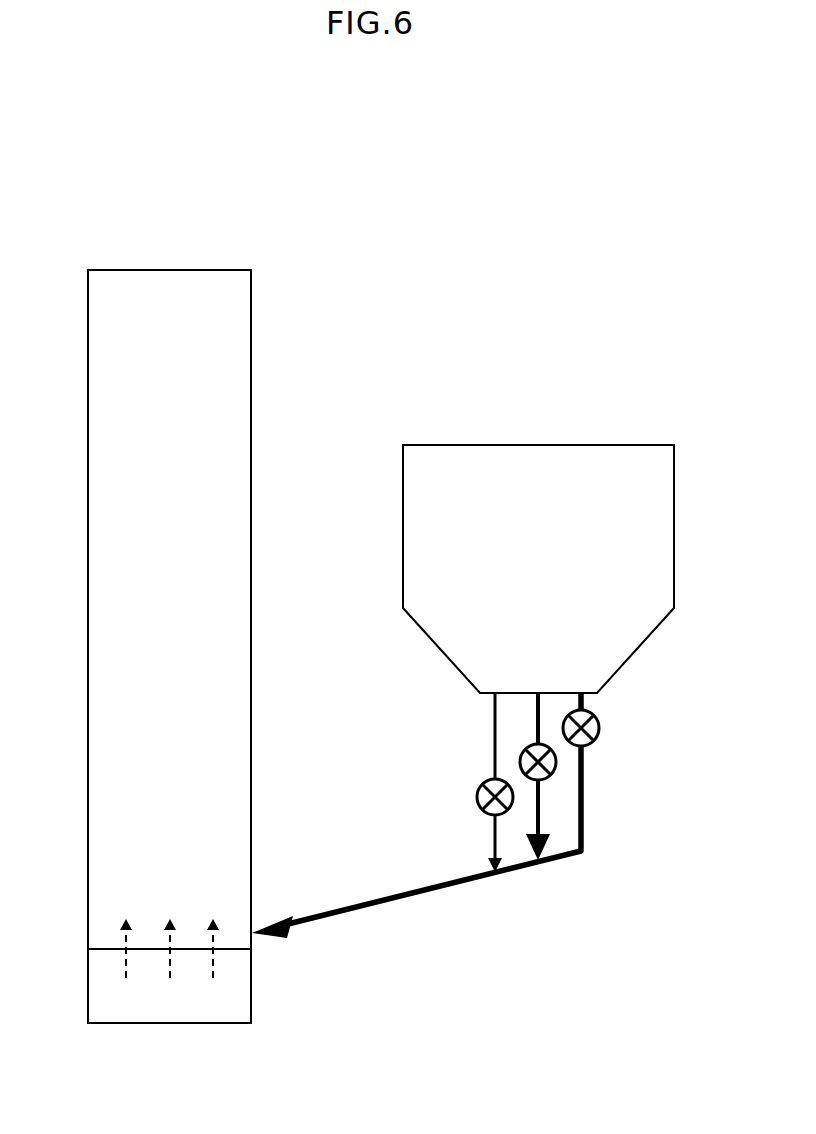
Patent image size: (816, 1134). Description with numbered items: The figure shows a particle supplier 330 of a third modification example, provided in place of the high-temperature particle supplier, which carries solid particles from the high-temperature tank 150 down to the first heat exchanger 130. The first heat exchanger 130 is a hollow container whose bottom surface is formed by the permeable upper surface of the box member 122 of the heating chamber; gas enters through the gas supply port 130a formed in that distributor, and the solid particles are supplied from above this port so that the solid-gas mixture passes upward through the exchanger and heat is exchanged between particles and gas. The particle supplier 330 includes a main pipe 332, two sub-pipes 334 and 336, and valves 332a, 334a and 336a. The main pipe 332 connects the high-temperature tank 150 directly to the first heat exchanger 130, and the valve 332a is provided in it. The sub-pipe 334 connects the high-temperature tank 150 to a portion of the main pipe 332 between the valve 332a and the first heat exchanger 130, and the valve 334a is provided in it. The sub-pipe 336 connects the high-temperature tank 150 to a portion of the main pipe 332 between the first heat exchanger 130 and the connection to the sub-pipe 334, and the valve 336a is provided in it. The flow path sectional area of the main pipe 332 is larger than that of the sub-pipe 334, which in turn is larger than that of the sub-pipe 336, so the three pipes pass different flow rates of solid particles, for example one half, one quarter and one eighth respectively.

The first heat exchanger 130 is at (171, 270).
The gas supply port 130a is at (166, 949).
The box member 122 is at (168, 1023).
The high-temperature tank 150 is at (540, 445).
The particle supplier 330 is at (380, 730).
The main pipe 332 is at (436, 893).
The valve 332a is at (600, 724).
The sub-pipe 334 is at (543, 822).
The valve 334a is at (557, 760).
The sub-pipe 336 is at (493, 837).
The valve 336a is at (477, 797).